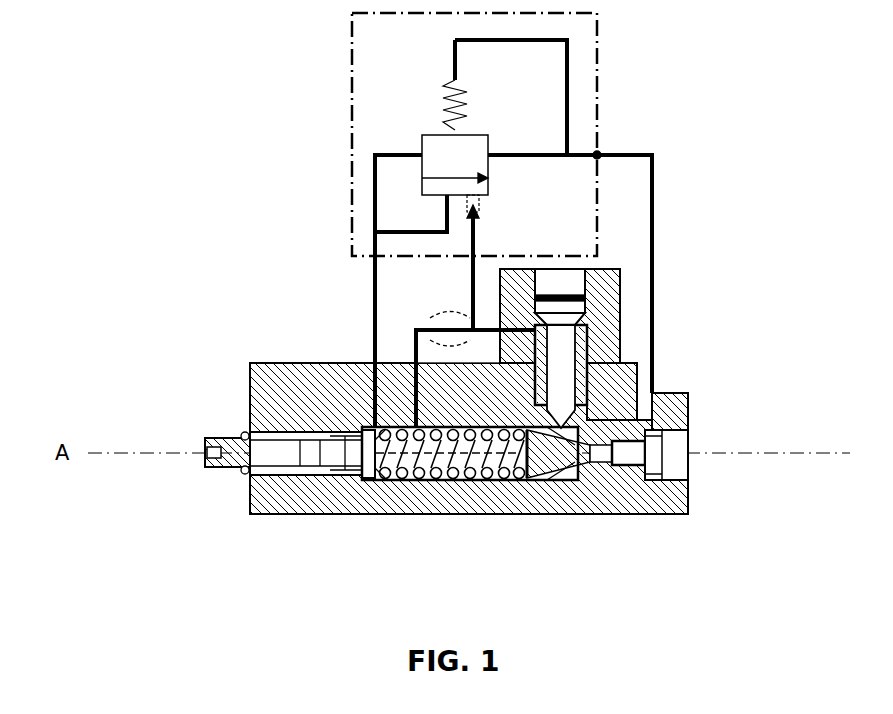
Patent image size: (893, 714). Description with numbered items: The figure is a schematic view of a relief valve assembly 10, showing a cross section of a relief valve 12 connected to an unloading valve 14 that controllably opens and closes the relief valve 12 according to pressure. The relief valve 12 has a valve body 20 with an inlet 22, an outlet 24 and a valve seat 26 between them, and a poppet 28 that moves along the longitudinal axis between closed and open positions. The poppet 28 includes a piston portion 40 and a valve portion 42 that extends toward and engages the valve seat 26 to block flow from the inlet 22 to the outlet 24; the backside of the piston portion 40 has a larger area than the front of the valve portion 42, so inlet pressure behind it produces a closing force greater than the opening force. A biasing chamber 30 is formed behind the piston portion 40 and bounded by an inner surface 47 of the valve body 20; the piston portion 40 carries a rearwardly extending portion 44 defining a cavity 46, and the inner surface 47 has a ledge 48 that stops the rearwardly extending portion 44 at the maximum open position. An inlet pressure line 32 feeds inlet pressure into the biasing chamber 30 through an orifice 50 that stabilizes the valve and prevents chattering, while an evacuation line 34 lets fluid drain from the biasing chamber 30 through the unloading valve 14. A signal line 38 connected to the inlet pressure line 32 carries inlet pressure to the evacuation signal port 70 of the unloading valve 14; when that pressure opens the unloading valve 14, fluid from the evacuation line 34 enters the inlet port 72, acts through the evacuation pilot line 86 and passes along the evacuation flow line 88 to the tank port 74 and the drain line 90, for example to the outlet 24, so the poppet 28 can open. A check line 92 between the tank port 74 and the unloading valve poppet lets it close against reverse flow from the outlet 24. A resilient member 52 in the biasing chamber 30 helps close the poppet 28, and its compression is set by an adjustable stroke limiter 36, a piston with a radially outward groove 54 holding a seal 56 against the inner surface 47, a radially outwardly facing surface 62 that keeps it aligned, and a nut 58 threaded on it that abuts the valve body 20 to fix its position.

The relief valve assembly 10 is at (757, 262).
The relief valve 12 is at (688, 504).
The unloading valve 14 is at (420, 133).
The valve body 20 is at (677, 500).
The inlet 22 is at (597, 267).
The outlet 24 is at (693, 483).
The valve seat 26 is at (615, 485).
The poppet 28 is at (598, 417).
The biasing chamber 30 is at (453, 483).
The inlet pressure line 32 is at (422, 340).
The evacuation line 34 is at (373, 343).
The adjustable stroke limiter 36 is at (205, 437).
The signal line 38 is at (473, 302).
The piston portion 40 is at (555, 485).
The valve portion 42 is at (690, 393).
The rearwardly extending portion 44 is at (523, 483).
The cavity 46 is at (470, 483).
The inner surface 47 is at (400, 483).
The ledge 48 is at (433, 483).
The orifice 50 is at (422, 315).
The resilient member 52 is at (383, 485).
The radially outward groove 54 is at (296, 430).
The seal 56 is at (300, 427).
The nut 58 is at (240, 431).
The radially outwardly facing surface 62 is at (358, 427).
The evacuation signal port 70 is at (475, 262).
The inlet port 72 is at (372, 256).
The tank port 74 is at (617, 153).
The evacuation pilot line 86 is at (445, 225).
The evacuation flow line 88 is at (375, 170).
The drain line 90 is at (522, 153).
The check line 92 is at (570, 55).